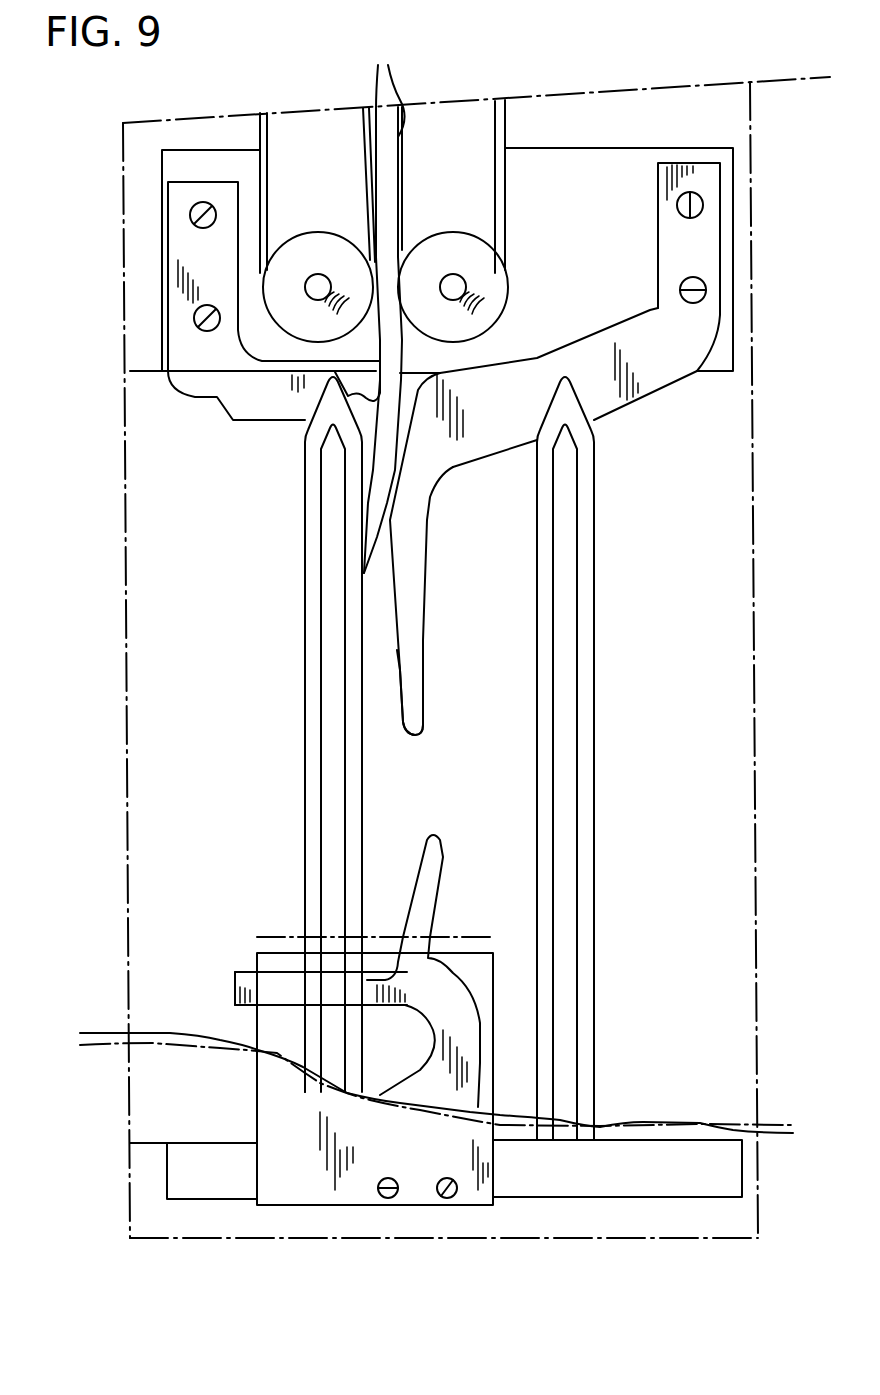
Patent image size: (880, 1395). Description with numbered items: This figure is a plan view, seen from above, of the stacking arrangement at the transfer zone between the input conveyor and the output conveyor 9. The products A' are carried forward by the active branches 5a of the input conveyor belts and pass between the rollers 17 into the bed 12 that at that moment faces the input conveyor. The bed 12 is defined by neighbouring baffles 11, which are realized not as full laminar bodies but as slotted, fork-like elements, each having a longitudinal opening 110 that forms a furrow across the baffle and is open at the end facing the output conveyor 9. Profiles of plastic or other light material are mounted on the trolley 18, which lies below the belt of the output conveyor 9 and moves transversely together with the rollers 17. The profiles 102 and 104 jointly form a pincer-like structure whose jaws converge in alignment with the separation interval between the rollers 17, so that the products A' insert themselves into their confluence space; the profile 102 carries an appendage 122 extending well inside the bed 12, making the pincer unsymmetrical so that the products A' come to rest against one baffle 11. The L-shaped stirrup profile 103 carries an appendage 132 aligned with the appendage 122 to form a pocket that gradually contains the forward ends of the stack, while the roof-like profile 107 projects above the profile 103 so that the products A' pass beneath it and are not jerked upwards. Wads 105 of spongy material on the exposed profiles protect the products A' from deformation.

The rollers 17 is at (300, 250).
The active branches of the belts of the conveyor 5a is at (384, 303).
The trolley 18 is at (195, 1190).
The products A' is at (404, 290).
The profile 104 is at (200, 373).
The wads 105 is at (268, 410).
The profile 102 is at (642, 377).
The bed 12 is at (490, 626).
The appendage 122 is at (412, 683).
The longitudinal opening 110 is at (333, 720).
The baffles 11 is at (313, 885).
The appendage 132 is at (440, 850).
The profile 103 is at (453, 998).
The conveyor 9 is at (703, 1080).
The profile 107 is at (298, 1157).